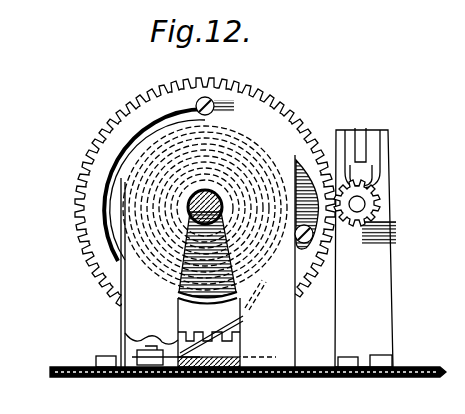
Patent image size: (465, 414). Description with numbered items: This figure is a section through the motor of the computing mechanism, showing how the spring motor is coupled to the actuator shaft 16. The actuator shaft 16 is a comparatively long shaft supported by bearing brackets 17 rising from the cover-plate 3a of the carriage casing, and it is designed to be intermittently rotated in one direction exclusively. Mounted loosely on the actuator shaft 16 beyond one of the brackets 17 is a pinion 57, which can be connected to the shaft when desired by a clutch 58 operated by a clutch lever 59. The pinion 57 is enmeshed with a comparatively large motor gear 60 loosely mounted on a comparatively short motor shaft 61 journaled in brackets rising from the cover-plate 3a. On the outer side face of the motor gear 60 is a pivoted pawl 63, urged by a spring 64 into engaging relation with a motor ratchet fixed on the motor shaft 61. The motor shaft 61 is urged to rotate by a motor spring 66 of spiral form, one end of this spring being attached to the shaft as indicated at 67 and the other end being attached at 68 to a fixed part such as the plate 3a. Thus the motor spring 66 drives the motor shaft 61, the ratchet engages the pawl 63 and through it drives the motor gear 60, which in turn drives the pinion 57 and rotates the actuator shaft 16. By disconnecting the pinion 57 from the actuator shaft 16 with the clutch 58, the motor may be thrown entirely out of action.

The motor gear 60 is at (288, 104).
The spring 64 is at (128, 132).
The motor shaft 61 is at (232, 268).
The spring attachment to shaft 67 is at (188, 246).
The motor spring 66 is at (213, 290).
The spring attachment to fixed part 68 is at (153, 367).
The pivoted pawl 63 is at (303, 188).
The bearing bracket 17 is at (380, 336).
The clutch lever 59 is at (361, 127).
The clutch 58 is at (386, 240).
The pinion 57 is at (388, 194).
The actuator shaft 16 is at (356, 210).
The cover-plate 3a is at (214, 367).